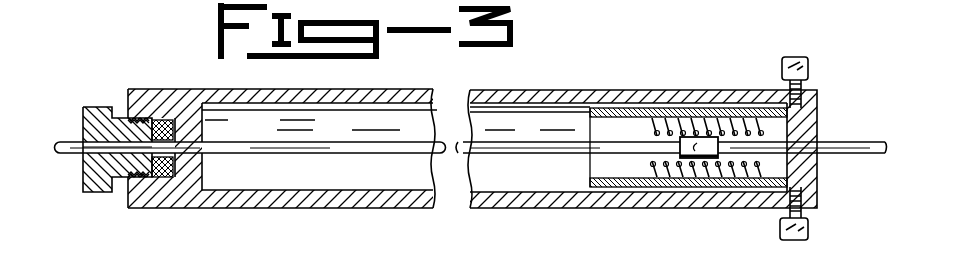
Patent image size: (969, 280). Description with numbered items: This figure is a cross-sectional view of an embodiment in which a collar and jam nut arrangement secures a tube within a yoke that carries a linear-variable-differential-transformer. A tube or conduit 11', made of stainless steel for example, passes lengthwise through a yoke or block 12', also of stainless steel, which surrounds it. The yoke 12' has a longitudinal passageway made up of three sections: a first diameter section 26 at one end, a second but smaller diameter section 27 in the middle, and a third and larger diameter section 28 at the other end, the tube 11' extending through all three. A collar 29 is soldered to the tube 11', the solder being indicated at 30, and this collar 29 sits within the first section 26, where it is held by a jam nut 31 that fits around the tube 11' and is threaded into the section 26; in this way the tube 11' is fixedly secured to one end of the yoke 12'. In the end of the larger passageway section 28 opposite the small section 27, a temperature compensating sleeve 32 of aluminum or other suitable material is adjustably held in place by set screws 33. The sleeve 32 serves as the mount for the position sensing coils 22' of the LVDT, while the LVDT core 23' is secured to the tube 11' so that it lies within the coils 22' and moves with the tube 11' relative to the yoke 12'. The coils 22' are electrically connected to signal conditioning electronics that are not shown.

The tube 11' is at (471, 163).
The yoke 12' is at (642, 135).
The position sensing coils 22' is at (707, 117).
The core 23' is at (666, 193).
The first diameter section 26 is at (173, 133).
The second diameter section 27 is at (217, 139).
The third diameter section 28 is at (257, 183).
The collar 29 is at (160, 172).
The solder 30 is at (165, 178).
The jam nut 31 is at (92, 106).
The temperature compensating sleeve 32 is at (633, 93).
The set screws 33 is at (808, 68).